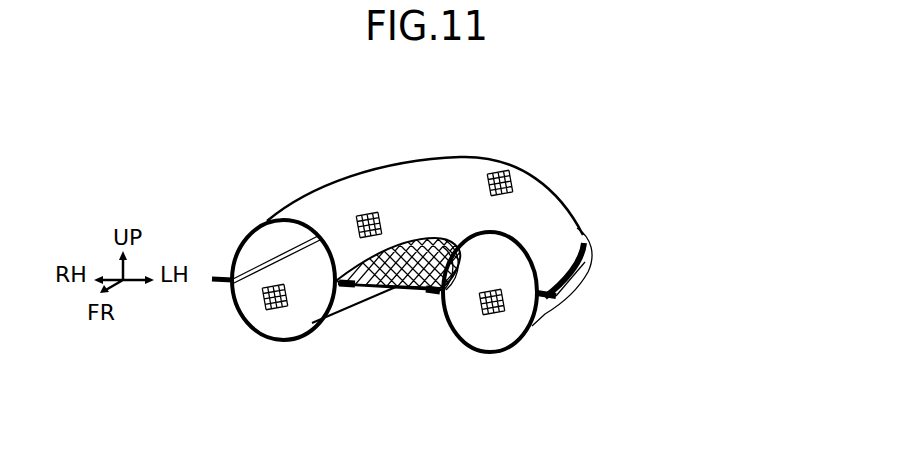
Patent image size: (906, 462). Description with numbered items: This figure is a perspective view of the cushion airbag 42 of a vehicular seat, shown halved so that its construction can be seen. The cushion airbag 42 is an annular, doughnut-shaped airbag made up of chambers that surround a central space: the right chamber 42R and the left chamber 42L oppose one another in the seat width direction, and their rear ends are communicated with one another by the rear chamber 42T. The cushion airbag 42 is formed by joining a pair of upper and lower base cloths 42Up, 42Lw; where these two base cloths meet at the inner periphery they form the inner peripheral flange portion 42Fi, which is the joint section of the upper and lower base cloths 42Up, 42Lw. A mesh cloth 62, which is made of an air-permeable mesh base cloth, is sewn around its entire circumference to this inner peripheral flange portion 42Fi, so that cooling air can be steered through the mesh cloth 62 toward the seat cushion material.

The cushion airbag 42 is at (605, 188).
The upper base cloth 42Up is at (265, 238).
The right chamber 42R is at (340, 200).
The left chamber 42L is at (548, 312).
The lower base cloth 42Lw is at (248, 302).
The rear chamber 42T is at (528, 182).
The inner peripheral flange portion 42Fi is at (425, 292).
The mesh cloth 62 is at (400, 287).